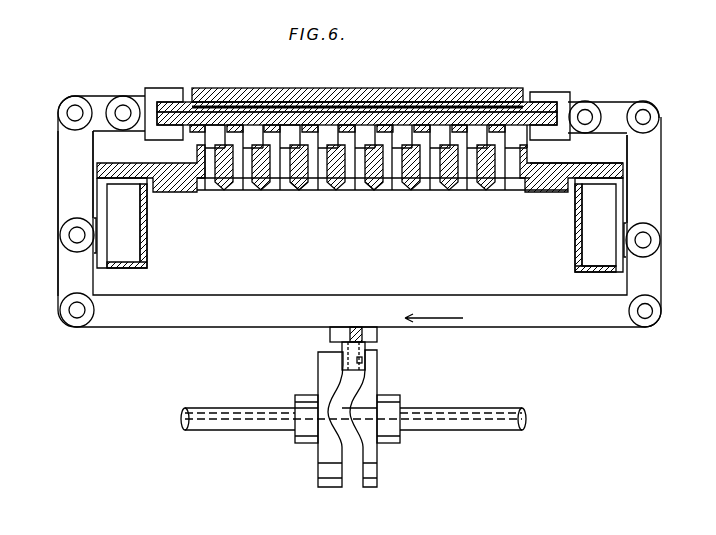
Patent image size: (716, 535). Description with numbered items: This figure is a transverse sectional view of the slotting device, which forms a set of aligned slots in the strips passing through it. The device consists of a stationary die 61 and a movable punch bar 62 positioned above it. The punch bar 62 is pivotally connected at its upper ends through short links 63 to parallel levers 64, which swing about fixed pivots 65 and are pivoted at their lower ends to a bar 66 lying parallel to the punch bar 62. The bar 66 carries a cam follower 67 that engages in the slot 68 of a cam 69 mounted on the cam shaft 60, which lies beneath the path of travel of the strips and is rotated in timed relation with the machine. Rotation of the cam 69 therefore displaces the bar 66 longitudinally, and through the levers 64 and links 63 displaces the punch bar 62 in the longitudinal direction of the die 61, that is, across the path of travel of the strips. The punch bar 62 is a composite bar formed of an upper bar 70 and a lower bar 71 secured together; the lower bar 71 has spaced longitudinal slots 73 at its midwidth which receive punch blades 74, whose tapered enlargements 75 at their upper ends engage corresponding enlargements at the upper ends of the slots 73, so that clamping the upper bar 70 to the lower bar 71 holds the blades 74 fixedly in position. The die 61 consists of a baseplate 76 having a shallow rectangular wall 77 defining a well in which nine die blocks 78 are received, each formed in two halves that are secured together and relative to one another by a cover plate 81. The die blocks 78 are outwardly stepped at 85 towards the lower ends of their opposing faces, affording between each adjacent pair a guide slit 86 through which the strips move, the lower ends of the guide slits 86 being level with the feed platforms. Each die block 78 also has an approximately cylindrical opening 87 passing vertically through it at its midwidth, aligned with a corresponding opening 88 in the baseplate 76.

The cam shaft 60 is at (472, 425).
The stationary die 61 is at (172, 192).
The punch bar 62 is at (474, 100).
The short links 63 is at (97, 97).
The parallel levers 64 is at (65, 160).
The fixed pivots 65 is at (73, 235).
The bar 66 is at (203, 318).
The cam follower 67 is at (362, 360).
The slot 68 is at (337, 383).
The cam 69 is at (370, 383).
The upper bar 70 is at (185, 100).
The lower bar 71 is at (540, 118).
The longitudinal slots 73 is at (283, 120).
The punch blades 74 is at (252, 138).
The tapered enlargements 75 is at (257, 114).
The baseplate 76 is at (542, 182).
The shallow rectangular wall 77 is at (535, 170).
The die blocks 78 is at (480, 168).
The cover plate 81 is at (403, 95).
The outward steps 85 is at (373, 180).
The guide slit 86 is at (306, 160).
The cylindrical opening 87 is at (507, 168).
The opening 88 is at (278, 187).